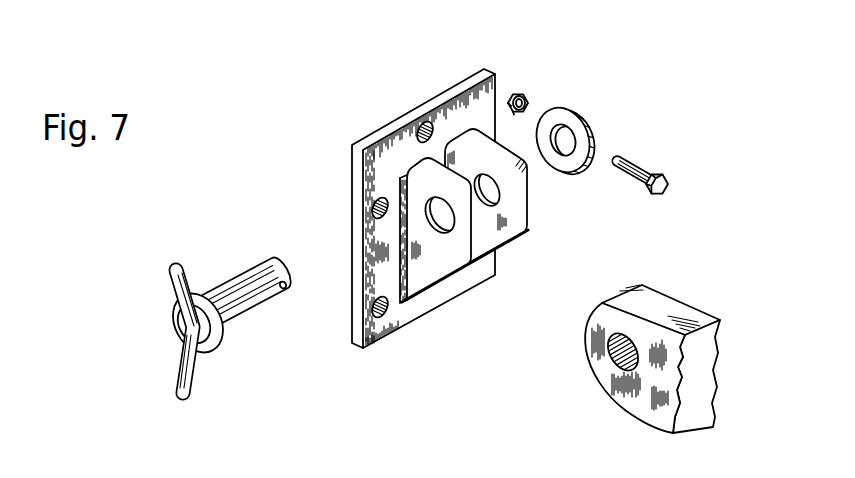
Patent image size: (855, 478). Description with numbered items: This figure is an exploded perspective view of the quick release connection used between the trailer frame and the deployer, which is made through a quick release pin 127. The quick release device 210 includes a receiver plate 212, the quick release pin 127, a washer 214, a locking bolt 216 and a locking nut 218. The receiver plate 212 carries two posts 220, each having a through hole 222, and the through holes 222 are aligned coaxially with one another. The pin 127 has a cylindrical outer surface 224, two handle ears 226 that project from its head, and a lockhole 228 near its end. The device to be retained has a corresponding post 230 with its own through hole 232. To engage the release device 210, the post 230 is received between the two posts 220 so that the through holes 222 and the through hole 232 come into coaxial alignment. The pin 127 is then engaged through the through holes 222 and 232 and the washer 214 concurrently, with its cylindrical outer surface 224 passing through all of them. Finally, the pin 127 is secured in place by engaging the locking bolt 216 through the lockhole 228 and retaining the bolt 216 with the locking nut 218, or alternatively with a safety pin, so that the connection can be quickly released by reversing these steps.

The quick release pin 127 is at (153, 295).
The quick release device 210 is at (356, 85).
The receiver plate 212 is at (502, 84).
The washer 214 is at (583, 123).
The locking bolt 216 is at (641, 160).
The locking nut 218 is at (530, 100).
The posts 220 is at (452, 264).
The through holes 222 is at (440, 236).
The cylindrical outer surface 224 is at (250, 318).
The handle ears 226 is at (176, 377).
The lockhole 228 is at (286, 296).
The post 230 is at (697, 313).
The through hole 232 is at (617, 360).